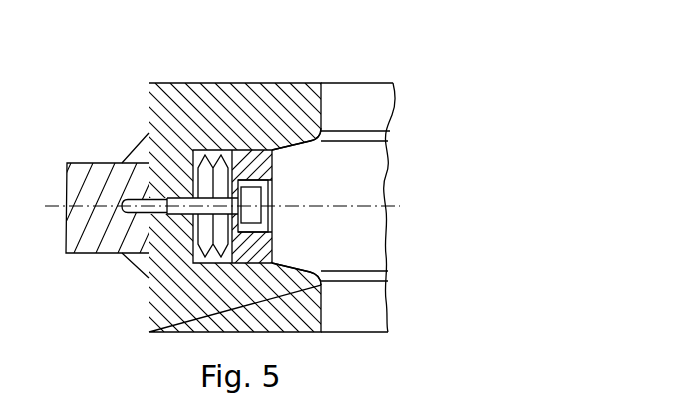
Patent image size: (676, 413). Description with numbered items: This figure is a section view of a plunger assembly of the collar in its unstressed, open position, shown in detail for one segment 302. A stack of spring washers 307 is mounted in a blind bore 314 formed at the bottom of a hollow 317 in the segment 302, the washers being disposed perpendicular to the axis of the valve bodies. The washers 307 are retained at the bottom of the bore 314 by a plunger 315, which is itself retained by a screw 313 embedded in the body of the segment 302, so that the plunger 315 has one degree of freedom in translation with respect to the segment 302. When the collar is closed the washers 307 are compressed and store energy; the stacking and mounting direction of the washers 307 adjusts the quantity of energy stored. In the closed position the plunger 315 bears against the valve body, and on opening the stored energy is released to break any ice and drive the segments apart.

The segment 302 is at (156, 100).
The spring washers 307 is at (206, 160).
The screw 313 is at (256, 195).
The blind bore 314 is at (293, 153).
The plunger 315 is at (254, 155).
The hollow 317 is at (360, 170).